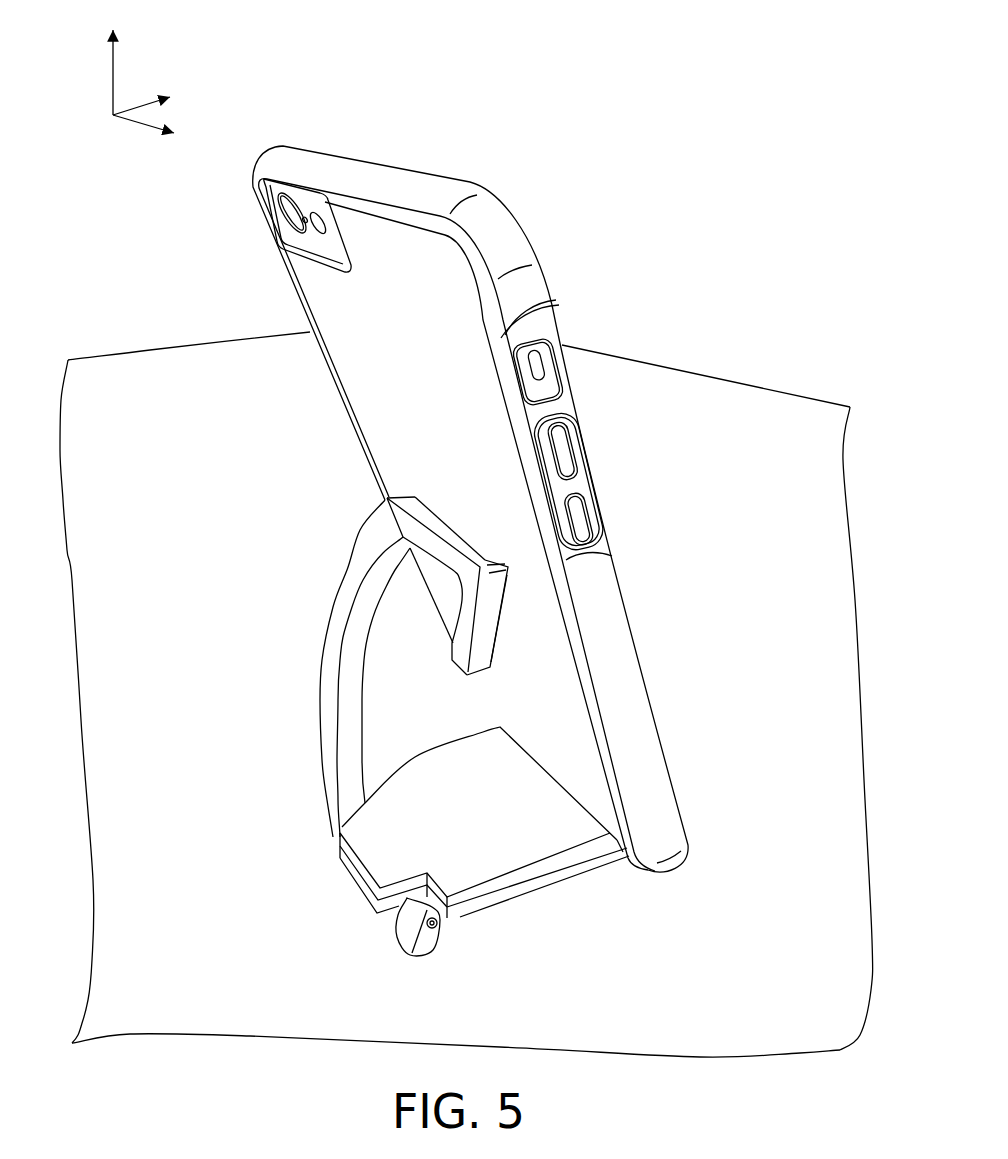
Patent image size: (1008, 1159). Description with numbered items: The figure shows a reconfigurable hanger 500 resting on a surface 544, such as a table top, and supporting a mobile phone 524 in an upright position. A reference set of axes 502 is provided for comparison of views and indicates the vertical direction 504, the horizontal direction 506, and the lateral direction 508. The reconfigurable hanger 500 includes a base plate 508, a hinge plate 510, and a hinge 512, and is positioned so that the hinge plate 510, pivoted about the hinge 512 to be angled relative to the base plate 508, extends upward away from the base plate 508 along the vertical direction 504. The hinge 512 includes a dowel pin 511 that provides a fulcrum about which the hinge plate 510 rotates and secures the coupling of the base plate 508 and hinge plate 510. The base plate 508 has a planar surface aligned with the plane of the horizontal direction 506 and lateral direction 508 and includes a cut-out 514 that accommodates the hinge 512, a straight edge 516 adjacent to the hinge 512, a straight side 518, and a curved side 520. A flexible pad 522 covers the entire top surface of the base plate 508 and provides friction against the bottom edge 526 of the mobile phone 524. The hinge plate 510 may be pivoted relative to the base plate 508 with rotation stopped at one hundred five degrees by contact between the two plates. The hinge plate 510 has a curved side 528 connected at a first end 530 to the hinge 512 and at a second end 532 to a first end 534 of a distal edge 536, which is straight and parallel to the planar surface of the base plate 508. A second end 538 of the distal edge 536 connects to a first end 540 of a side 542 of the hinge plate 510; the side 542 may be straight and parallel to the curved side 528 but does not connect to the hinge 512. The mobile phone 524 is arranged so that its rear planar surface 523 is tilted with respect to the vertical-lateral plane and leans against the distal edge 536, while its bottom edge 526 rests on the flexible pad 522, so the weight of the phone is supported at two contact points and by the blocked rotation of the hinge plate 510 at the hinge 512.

The reconfigurable hanger 500 is at (186, 851).
The reference set of axes 502 is at (170, 66).
The vertical direction 504 is at (110, 66).
The horizontal direction 506 is at (150, 103).
The base plate 508 is at (126, 124).
The hinge plate 510 is at (288, 623).
The dowel pin 511 is at (438, 927).
The hinge 512 is at (420, 968).
The cut-out 514 is at (405, 895).
The straight edge 516 is at (348, 877).
The straight side 518 is at (487, 903).
The curved side 520 is at (449, 740).
The flexible pad 522 is at (557, 843).
The rear planar surface 523 is at (448, 399).
The mobile phone 524 is at (636, 388).
The bottom edge 526 is at (617, 845).
The curved side 528 is at (318, 700).
The first end 530 is at (337, 836).
The second end 532 is at (383, 503).
The first end 534 is at (388, 497).
The distal edge 536 is at (446, 527).
The second end 538 is at (497, 562).
The first end 540 is at (500, 580).
The side 542 is at (497, 622).
The surface 544 is at (800, 762).